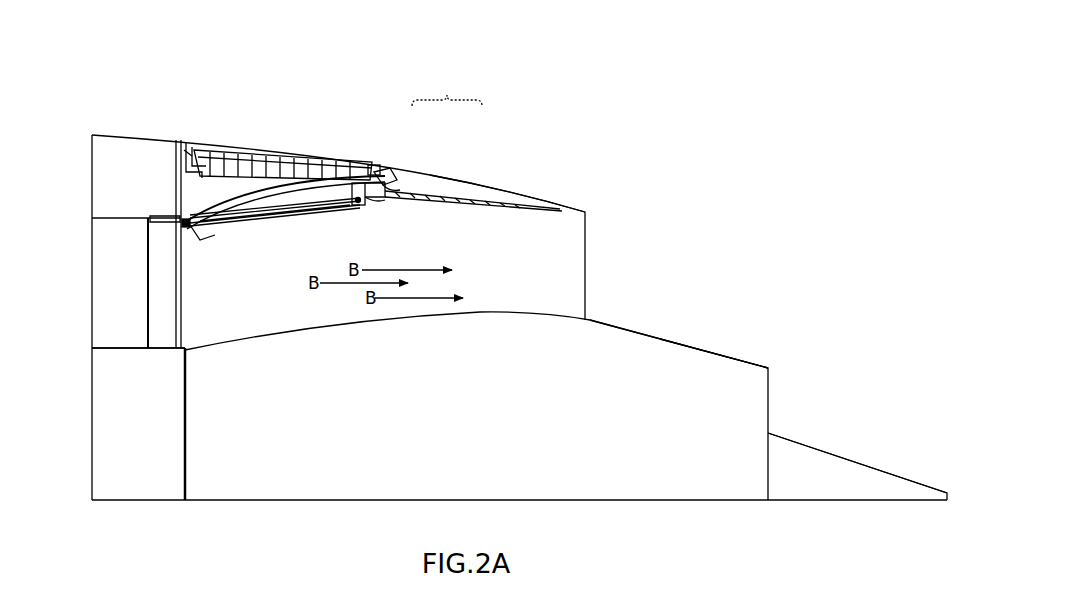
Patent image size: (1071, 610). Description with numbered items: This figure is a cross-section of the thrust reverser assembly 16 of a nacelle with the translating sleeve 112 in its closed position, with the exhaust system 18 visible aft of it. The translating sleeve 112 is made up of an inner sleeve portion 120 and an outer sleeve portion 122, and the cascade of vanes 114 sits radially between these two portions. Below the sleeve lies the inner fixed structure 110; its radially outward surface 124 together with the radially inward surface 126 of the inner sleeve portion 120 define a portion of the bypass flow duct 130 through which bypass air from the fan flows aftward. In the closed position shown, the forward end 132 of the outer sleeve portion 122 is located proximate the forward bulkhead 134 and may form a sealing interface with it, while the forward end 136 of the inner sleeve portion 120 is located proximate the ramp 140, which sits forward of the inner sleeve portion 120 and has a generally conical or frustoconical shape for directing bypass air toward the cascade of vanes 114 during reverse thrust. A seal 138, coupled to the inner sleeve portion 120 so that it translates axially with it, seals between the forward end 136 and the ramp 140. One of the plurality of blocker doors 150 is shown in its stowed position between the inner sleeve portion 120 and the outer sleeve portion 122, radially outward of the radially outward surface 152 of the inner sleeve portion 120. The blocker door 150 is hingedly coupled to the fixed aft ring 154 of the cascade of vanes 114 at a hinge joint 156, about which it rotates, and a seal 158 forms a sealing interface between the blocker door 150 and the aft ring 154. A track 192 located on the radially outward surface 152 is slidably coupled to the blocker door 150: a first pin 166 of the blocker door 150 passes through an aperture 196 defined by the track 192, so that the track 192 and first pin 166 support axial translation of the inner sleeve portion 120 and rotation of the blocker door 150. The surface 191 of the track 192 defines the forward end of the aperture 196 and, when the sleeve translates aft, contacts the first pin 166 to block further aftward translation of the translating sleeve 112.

The thrust reverser assembly 16 is at (207, 84).
The exhaust system 18 is at (835, 468).
The inner fixed structure 110 is at (623, 343).
The translating sleeve 112 is at (447, 90).
The cascade of vanes 114 is at (241, 163).
The inner sleeve portion 120 is at (458, 180).
The outer sleeve portion 122 is at (427, 190).
The radially outward surface 124 is at (697, 347).
The radially inward surface 126 is at (488, 255).
The bypass flow duct 130 is at (212, 303).
The forward end 132 is at (186, 146).
The forward bulkhead 134 is at (186, 156).
The forward end 136 is at (178, 322).
The seal 138 is at (188, 228).
The ramp 140 is at (178, 218).
The blocker door 150 is at (311, 183).
The radially outward surface 152 is at (385, 200).
The aft ring 154 is at (371, 166).
The hinge joint 156 is at (389, 187).
The seal 158 is at (385, 174).
The first pin 166 is at (358, 204).
The surface 191 is at (206, 228).
The track 192 is at (312, 210).
The aperture 196 is at (278, 219).